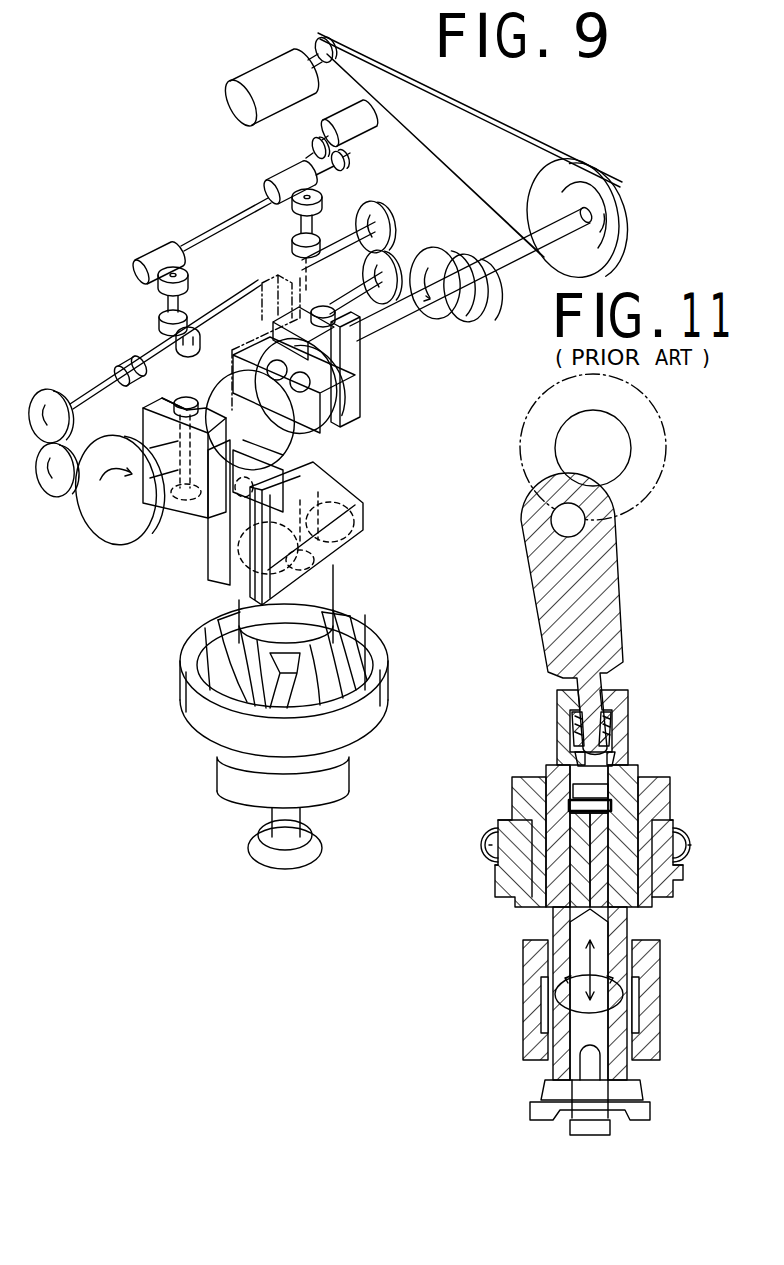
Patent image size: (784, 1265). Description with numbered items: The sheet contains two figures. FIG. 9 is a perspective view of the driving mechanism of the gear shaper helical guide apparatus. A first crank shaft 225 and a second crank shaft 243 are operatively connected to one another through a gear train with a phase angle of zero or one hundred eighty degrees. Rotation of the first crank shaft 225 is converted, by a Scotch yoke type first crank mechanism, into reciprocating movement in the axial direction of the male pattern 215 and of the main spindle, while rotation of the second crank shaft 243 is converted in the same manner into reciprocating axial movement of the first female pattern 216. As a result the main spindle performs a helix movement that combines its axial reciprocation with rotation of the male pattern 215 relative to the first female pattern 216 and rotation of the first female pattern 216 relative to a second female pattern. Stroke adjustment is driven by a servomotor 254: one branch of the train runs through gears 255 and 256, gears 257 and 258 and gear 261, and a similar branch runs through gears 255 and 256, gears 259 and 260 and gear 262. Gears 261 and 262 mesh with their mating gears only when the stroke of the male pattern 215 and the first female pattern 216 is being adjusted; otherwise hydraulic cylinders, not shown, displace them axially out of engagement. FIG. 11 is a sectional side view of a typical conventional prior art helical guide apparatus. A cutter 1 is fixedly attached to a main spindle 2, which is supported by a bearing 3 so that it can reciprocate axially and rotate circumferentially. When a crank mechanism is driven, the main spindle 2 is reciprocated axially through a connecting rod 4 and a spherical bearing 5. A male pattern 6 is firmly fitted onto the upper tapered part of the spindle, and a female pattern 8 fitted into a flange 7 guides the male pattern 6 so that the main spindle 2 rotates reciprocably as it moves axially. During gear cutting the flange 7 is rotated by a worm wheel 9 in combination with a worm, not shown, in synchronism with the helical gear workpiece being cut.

In FIG. 9, the servomotor 254 is at (328, 133).
In FIG. 9, the gear 255 is at (312, 151).
In FIG. 9, the gear 256 is at (350, 162).
In FIG. 9, the gear 257 is at (278, 185).
In FIG. 9, the gear 258 is at (322, 194).
In FIG. 9, the gear 259 is at (158, 262).
In FIG. 9, the gear 260 is at (188, 274).
In FIG. 9, the gear 261 is at (292, 240).
In FIG. 9, the gear 262 is at (160, 322).
In FIG. 9, the first crank shaft 225 is at (394, 326).
In FIG. 9, the second crank shaft 243 is at (163, 492).
In FIG. 9, the male pattern 215 is at (335, 556).
In FIG. 9, the first female pattern 216 is at (350, 660).
In FIG. 11, the cutter 1 is at (642, 1110).
In FIG. 11, the main spindle 2 is at (558, 1048).
In FIG. 11, the bearing 3 is at (643, 999).
In FIG. 11, the connecting rod 4 is at (617, 585).
In FIG. 11, the spherical bearing 5 is at (617, 713).
In FIG. 11, the male pattern 6 is at (553, 764).
In FIG. 11, the flange 7 is at (506, 888).
In FIG. 11, the female pattern 8 is at (520, 790).
In FIG. 11, the worm wheel 9 is at (490, 840).